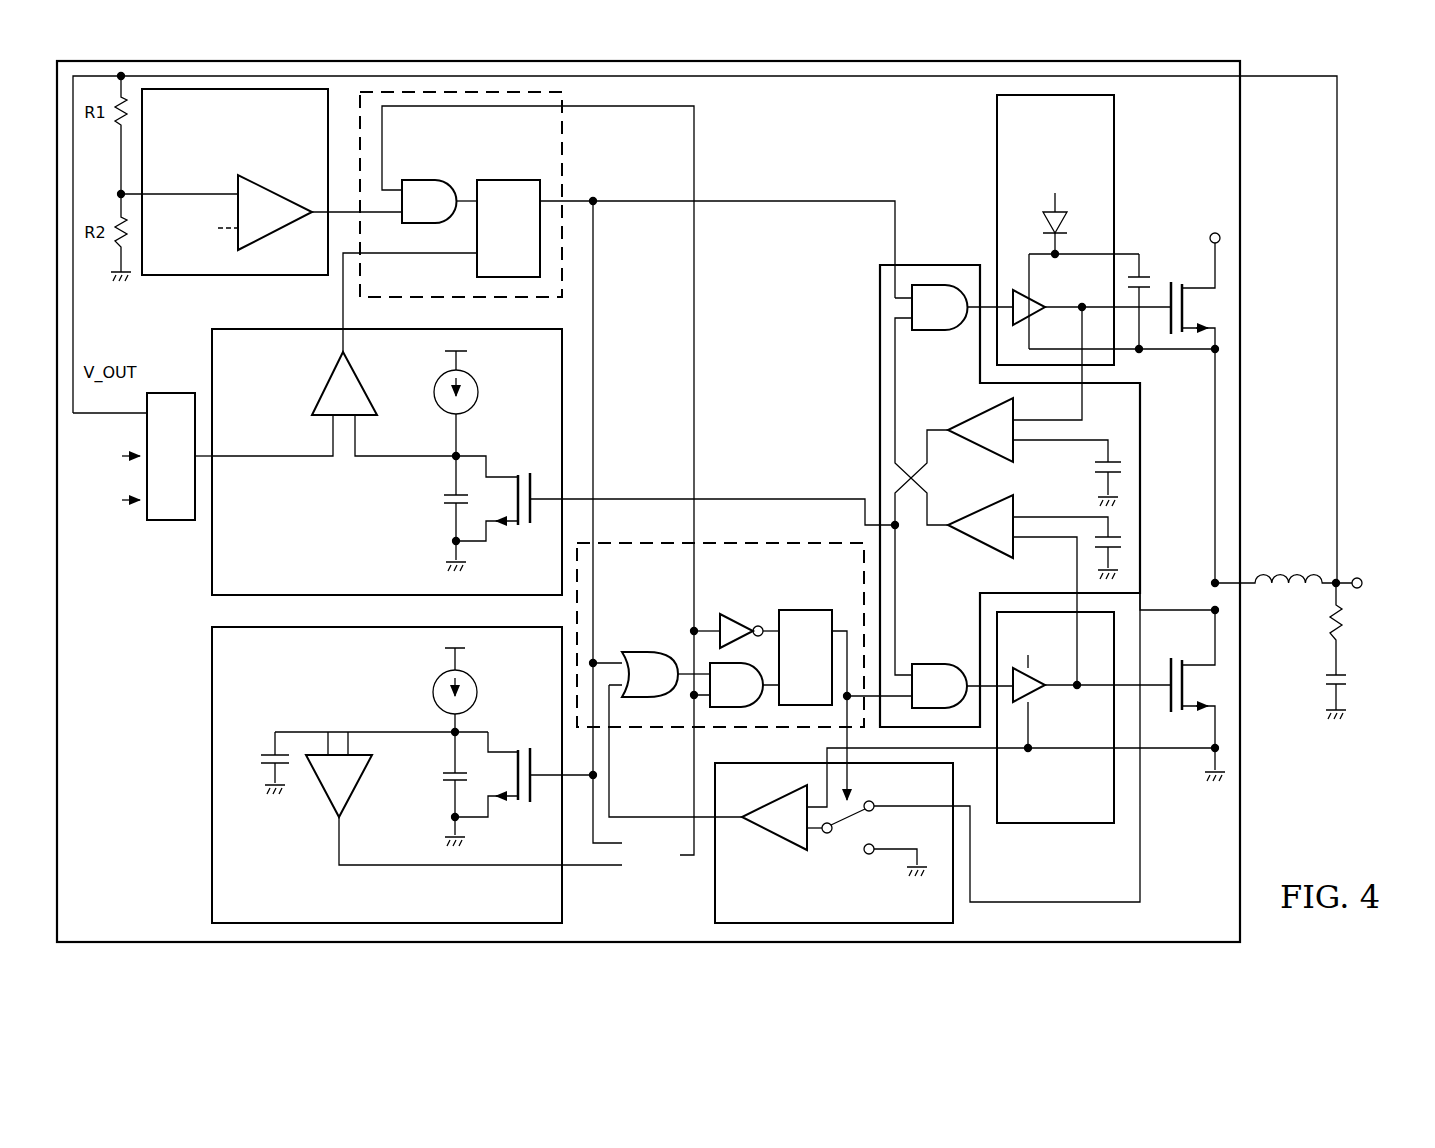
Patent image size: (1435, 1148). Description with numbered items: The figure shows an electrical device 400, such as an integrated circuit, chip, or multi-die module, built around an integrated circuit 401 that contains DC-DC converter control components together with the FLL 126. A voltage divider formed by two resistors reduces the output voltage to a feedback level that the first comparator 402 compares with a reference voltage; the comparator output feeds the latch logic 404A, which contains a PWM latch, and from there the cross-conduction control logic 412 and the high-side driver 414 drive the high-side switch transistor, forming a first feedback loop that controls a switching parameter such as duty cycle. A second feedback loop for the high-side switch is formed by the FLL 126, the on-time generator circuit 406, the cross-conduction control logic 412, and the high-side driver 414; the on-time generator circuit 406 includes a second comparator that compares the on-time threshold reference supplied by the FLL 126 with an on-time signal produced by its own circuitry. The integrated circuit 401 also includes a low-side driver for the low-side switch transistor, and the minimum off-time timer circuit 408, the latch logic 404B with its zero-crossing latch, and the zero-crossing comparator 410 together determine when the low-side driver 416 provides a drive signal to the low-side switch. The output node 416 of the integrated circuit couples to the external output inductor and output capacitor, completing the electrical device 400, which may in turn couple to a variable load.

The electrical device 400 is at (1352, 106).
The integrated circuit 401 is at (125, 775).
The first comparator 402 is at (183, 281).
The latch logic 404A is at (568, 143).
The latch logic 404B is at (657, 732).
The on-time generator circuit 406 is at (308, 576).
The minimum off-time timer circuit 408 is at (308, 690).
The zero-crossing comparator 410 is at (711, 893).
The cross-conduction control logic 412 is at (935, 260).
The high-side driver 414 is at (1119, 152).
The output node 416 is at (1058, 828).
The FLL 126 is at (172, 522).